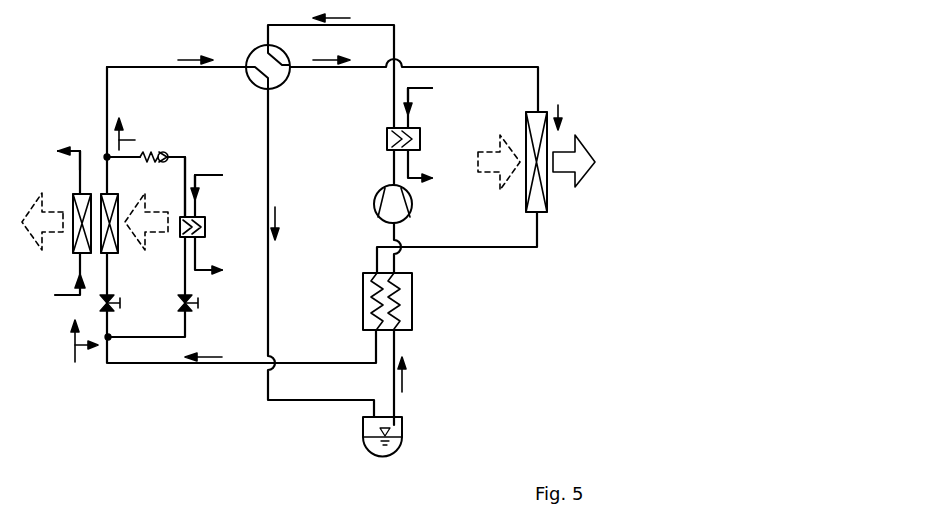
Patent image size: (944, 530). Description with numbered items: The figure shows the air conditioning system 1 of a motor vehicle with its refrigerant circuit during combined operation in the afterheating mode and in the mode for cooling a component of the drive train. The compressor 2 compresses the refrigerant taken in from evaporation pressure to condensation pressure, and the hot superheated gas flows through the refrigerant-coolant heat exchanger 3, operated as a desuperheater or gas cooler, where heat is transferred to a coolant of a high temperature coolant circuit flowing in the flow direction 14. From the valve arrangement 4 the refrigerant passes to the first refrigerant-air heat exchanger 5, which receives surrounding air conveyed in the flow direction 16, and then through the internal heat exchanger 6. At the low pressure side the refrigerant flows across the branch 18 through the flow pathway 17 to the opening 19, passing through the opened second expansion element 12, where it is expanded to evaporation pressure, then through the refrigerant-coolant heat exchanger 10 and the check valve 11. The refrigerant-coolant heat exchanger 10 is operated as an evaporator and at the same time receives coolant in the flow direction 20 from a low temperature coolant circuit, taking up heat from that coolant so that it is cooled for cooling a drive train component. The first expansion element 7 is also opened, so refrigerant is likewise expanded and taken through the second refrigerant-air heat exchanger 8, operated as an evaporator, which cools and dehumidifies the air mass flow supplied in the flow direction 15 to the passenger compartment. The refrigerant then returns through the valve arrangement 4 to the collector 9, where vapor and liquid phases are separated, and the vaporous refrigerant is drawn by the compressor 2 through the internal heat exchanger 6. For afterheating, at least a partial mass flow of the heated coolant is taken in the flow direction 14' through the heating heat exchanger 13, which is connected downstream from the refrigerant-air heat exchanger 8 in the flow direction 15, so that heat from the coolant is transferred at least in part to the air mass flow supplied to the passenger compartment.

The air conditioning system 1 is at (564, 78).
The compressor 2 is at (390, 215).
The refrigerant-coolant heat exchanger 3 is at (419, 146).
The valve arrangement 4 is at (257, 57).
The first refrigerant-air heat exchanger 5 is at (541, 204).
The internal heat exchanger 6 is at (408, 323).
The first expansion element 7 is at (115, 313).
The second refrigerant-air heat exchanger 8 is at (110, 248).
The collector 9 is at (383, 453).
The refrigerant-coolant heat exchanger 10 is at (204, 235).
The check valve 11 is at (168, 158).
The second expansion element 12 is at (190, 312).
The heating heat exchanger 13 is at (78, 250).
The flow direction 14 is at (439, 106).
The flow direction 14' is at (55, 136).
The flow direction 15 is at (57, 207).
The flow direction 16 is at (495, 165).
The flow pathway 17 is at (185, 173).
The branch 18 is at (107, 340).
The opening 19 is at (106, 152).
The flow direction 20 is at (213, 178).